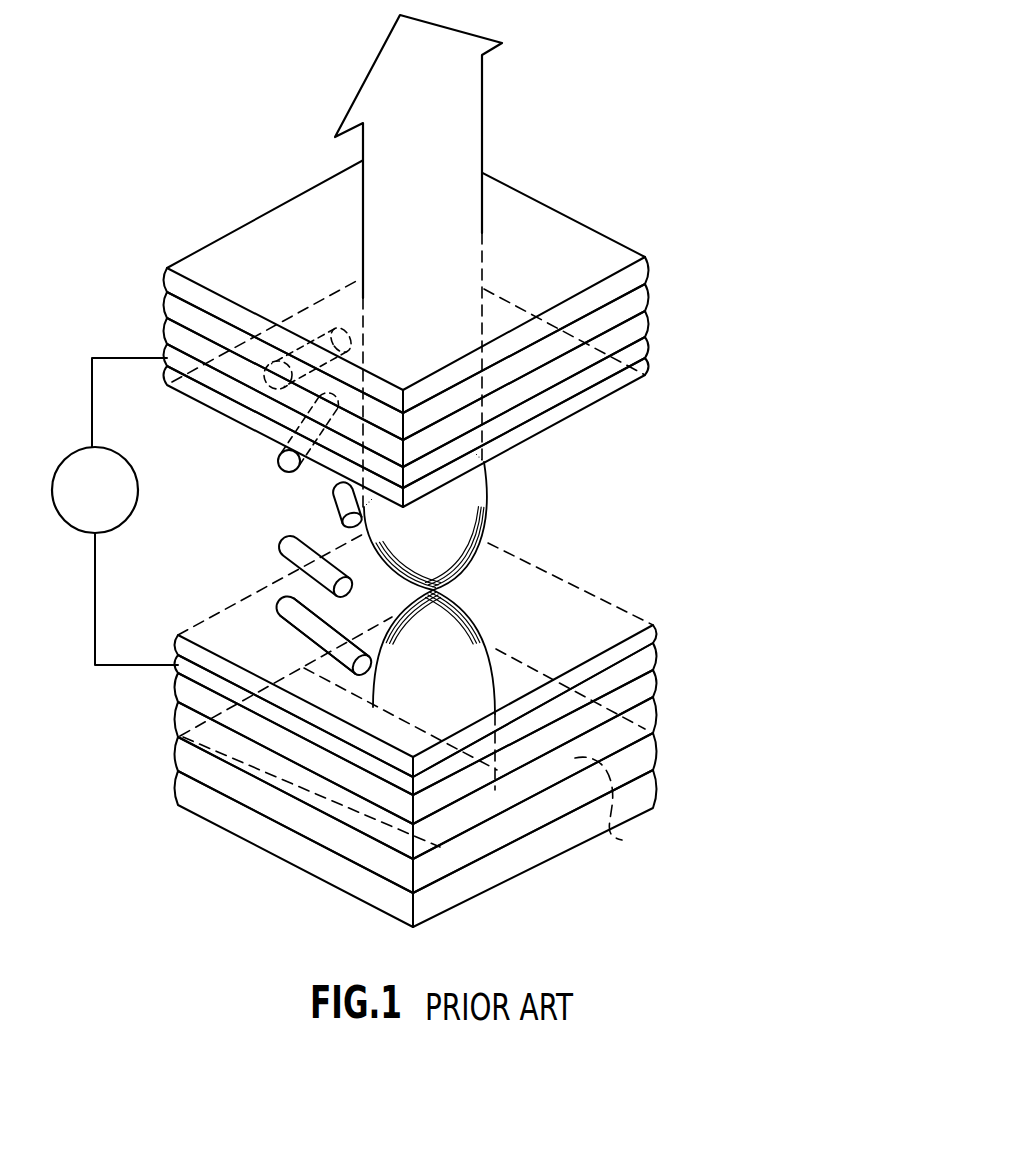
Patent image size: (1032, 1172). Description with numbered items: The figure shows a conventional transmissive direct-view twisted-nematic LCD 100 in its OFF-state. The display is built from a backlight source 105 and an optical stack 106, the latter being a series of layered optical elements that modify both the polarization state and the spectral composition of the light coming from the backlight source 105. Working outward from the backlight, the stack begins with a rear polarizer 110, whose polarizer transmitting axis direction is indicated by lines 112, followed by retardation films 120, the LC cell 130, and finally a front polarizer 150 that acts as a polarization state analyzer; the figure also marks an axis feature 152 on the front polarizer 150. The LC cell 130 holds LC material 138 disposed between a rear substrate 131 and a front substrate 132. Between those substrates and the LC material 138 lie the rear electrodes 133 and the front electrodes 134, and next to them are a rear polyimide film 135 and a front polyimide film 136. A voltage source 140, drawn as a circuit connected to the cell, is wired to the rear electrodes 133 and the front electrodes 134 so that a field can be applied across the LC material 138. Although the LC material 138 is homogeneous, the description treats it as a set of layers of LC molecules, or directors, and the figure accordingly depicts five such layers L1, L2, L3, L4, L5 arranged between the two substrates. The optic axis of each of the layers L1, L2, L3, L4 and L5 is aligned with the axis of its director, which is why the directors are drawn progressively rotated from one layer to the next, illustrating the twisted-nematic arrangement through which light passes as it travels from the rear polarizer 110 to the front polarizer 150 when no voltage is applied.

The transmissive direct-view twisted-nematic LCD 100 is at (772, 178).
The backlight source 105 is at (654, 770).
The optical stack 106 is at (862, 212).
The rear polarizer 110 is at (654, 733).
The lines indicating polarizer transmitting axis 112 is at (624, 840).
The retardation films 120 is at (646, 288).
The LC cell 130 is at (776, 308).
The rear substrate 131 is at (654, 670).
The front substrate 132 is at (646, 315).
The rear electrodes 133 is at (654, 645).
The front electrodes 134 is at (646, 342).
The rear polyimide film 135 is at (654, 627).
The front polyimide film 136 is at (646, 368).
The LC material 138 is at (285, 628).
The voltage source 140 is at (117, 450).
The front polarizer 150 is at (646, 262).
The polarization transmission axis 152 is at (590, 258).
The layer of LC molecules L1 is at (285, 605).
The layer of LC molecules L2 is at (291, 546).
The layer of LC molecules L3 is at (336, 499).
The layer of LC molecules L4 is at (262, 447).
The layer of LC molecules L5 is at (235, 418).